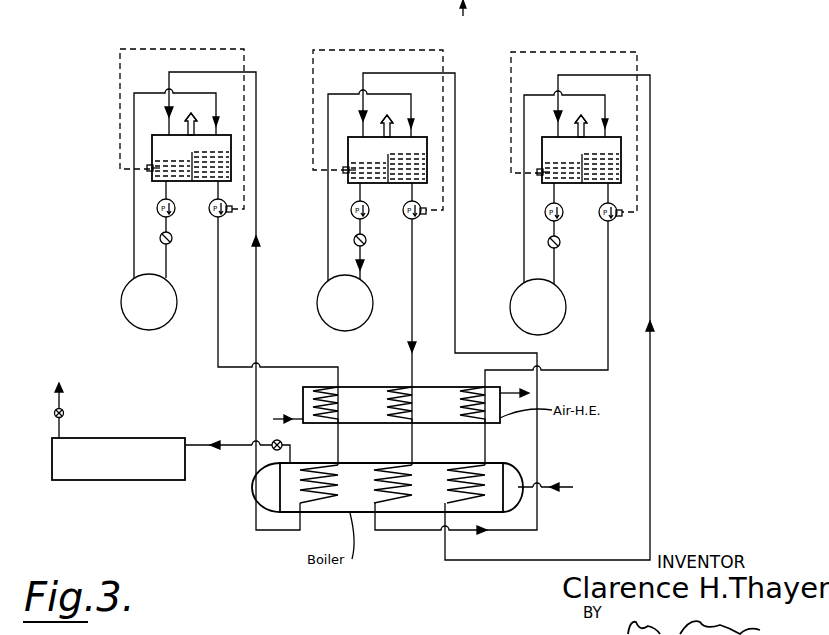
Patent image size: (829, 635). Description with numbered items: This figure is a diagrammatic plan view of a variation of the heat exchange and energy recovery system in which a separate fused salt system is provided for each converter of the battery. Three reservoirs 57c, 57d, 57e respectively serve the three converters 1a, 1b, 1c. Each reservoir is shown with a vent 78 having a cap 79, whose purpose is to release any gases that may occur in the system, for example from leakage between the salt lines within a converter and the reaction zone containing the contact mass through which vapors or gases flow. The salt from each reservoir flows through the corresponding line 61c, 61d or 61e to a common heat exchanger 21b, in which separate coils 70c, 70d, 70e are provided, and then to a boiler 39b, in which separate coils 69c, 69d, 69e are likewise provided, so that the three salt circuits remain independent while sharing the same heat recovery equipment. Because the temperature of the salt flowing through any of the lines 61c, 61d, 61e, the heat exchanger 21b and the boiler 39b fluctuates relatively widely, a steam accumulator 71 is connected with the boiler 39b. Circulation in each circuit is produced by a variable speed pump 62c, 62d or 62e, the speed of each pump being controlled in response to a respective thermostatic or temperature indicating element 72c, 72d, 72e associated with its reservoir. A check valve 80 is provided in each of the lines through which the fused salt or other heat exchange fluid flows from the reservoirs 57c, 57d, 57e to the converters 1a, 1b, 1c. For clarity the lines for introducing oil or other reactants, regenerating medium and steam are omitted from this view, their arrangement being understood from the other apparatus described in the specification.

The converter 1a is at (168, 326).
The converter 1b is at (365, 328).
The converter 1c is at (560, 328).
The heat exchanger 21b is at (303, 389).
The boiler 39b is at (284, 498).
The reservoir 57c is at (152, 148).
The reservoir 57d is at (348, 150).
The reservoir 57e is at (542, 151).
The line 61c is at (219, 267).
The line 61d is at (412, 271).
The line 61e is at (609, 270).
The variable speed pump 62c is at (213, 215).
The variable speed pump 62d is at (416, 221).
The variable speed pump 62e is at (612, 222).
The coil 69c is at (305, 503).
The coil 69d is at (397, 503).
The coil 69e is at (484, 473).
The coil 70c is at (328, 424).
The coil 70d is at (402, 424).
The coil 70e is at (479, 424).
The steam accumulator 71 is at (153, 481).
The thermostatic or temperature indicating element 72c is at (147, 171).
The thermostatic or temperature indicating element 72d is at (343, 173).
The thermostatic or temperature indicating element 72e is at (537, 175).
The vent 78 is at (195, 128).
The cap 79 is at (195, 103).
The check valve 80 is at (171, 242).